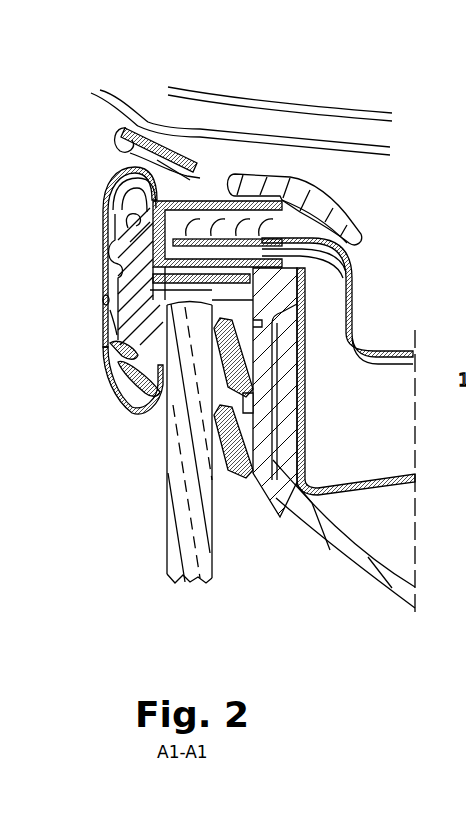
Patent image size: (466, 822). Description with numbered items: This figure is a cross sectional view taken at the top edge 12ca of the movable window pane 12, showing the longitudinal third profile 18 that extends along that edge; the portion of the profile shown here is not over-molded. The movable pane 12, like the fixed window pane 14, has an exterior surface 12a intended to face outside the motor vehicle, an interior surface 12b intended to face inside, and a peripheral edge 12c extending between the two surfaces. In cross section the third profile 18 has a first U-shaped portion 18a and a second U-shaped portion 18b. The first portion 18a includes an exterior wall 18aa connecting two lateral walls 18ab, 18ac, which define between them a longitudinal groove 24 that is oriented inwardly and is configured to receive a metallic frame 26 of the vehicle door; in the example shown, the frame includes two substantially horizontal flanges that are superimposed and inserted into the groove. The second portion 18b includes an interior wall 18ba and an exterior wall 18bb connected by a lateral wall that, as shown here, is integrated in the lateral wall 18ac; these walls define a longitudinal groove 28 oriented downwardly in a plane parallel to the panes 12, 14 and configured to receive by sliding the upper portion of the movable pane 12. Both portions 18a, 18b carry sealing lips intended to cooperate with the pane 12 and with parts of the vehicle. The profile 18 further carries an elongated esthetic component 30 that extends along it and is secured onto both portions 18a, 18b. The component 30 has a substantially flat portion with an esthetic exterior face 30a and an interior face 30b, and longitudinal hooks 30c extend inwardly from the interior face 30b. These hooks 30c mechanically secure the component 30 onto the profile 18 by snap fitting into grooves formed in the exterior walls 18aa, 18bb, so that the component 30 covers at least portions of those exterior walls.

The movable window pane 12 is at (158, 548).
The exterior surface 12a is at (167, 480).
The interior surface 12b is at (213, 557).
The peripheral edge 12c is at (152, 297).
The top edge 12ca is at (113, 322).
The fixed window pane 14 is at (458, 426).
The third profile 18 is at (107, 146).
The first U-shaped portion 18a is at (216, 150).
The exterior wall 18aa is at (110, 213).
The lateral wall 18ab is at (232, 196).
The lateral wall 18ac is at (205, 178).
The second U-shaped portion 18b is at (289, 372).
The interior wall 18ba is at (267, 337).
The exterior wall 18bb is at (122, 383).
The longitudinal groove 24 is at (252, 192).
The metallic frame 26 is at (296, 260).
The longitudinal groove 28 is at (218, 392).
The esthetic component 30 is at (105, 277).
The esthetic exterior face 30a is at (103, 233).
The interior face 30b is at (108, 310).
The longitudinal hooks 30c is at (115, 177).